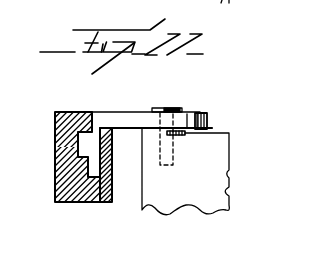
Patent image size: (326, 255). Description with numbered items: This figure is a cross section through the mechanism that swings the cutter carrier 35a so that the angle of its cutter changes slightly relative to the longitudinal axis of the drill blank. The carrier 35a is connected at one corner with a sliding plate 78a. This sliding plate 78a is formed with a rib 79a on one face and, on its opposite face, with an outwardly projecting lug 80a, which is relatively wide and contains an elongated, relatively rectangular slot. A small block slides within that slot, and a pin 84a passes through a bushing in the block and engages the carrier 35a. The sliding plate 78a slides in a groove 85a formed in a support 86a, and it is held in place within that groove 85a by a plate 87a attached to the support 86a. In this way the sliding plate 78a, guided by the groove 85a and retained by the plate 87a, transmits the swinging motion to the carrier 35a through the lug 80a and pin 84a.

The carrier 35a is at (211, 168).
The sliding plate 78a is at (129, 118).
The rib 79a is at (90, 148).
The lug 80a is at (207, 121).
The pin 84a is at (175, 108).
The groove 85a is at (78, 153).
The support 86a is at (62, 182).
The plate 87a is at (112, 187).